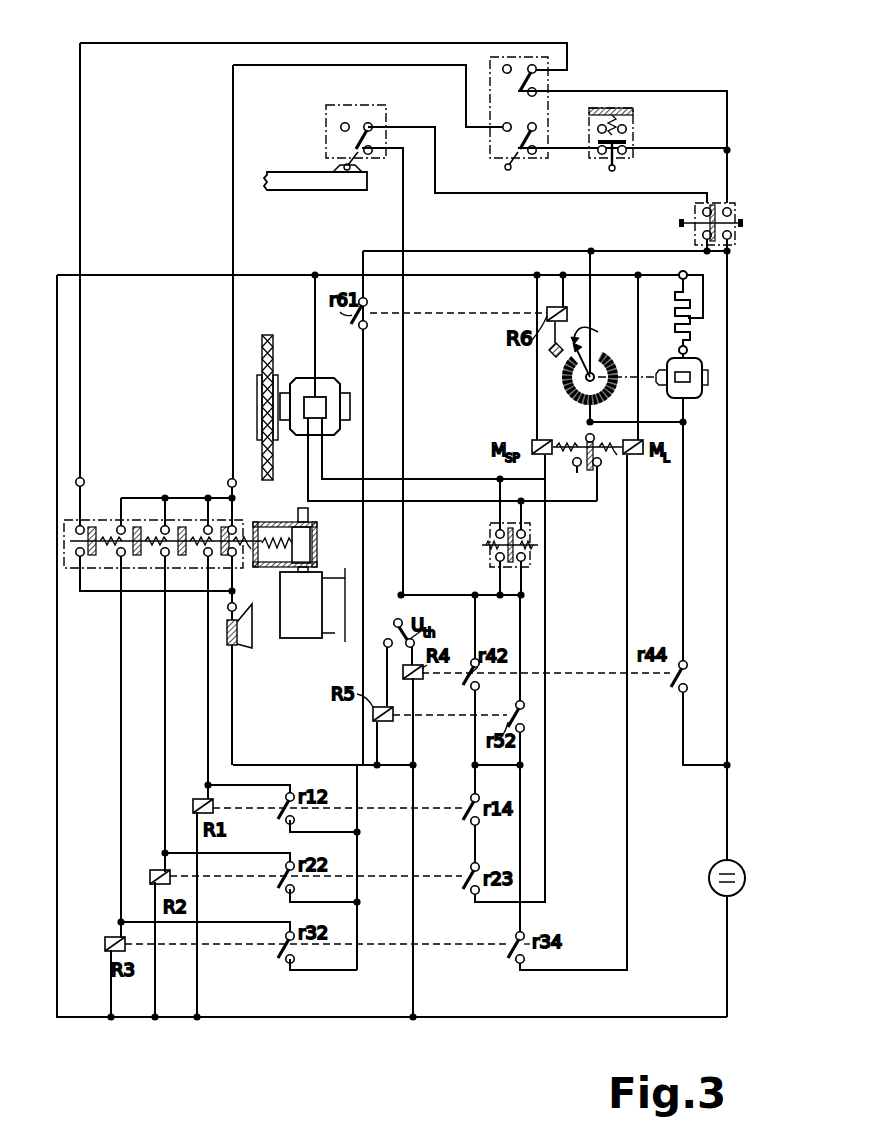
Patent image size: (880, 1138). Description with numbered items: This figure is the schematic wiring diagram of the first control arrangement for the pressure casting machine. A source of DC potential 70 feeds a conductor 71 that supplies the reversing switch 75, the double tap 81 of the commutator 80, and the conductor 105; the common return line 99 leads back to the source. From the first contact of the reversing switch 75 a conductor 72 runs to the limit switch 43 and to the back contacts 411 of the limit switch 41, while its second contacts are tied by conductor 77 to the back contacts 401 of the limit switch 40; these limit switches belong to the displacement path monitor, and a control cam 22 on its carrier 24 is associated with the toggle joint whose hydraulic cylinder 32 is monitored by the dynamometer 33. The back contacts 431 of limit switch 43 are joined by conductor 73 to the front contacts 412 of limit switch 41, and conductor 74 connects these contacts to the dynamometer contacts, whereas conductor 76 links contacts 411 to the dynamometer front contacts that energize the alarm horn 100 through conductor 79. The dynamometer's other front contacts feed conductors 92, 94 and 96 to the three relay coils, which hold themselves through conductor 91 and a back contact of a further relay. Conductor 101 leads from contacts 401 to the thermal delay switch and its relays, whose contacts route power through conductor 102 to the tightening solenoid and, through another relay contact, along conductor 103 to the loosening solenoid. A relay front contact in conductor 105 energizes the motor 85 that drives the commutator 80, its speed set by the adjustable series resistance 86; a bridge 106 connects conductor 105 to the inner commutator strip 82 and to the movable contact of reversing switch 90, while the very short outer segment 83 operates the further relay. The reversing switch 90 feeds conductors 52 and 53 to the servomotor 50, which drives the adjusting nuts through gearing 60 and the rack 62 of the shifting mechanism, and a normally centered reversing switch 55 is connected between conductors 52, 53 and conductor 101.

The conductor 76 is at (180, 43).
The conductor 74 is at (233, 123).
The limit switch 40 is at (322, 115).
The back contacts of limit switch 40 401 is at (373, 130).
The control cam 22 is at (333, 168).
The carrier 24 is at (308, 190).
The limit switch 41 is at (490, 140).
The back contacts of limit switch 41 411 is at (547, 80).
The front contacts of limit switch 41 412 is at (510, 151).
The conductor 72 is at (678, 93).
The conductor 73 is at (564, 158).
The limit switch 43 is at (640, 129).
The back contacts of limit switch 43 431 is at (617, 167).
The reversing switch 75 is at (712, 202).
The conductor 77 is at (553, 195).
The conductor 71 is at (434, 251).
The return line 99 is at (440, 277).
The adjustable speed controlling series resistance 86 is at (676, 300).
The motor 85 is at (703, 359).
The bridge 106 is at (668, 422).
The commutator 80 is at (614, 344).
The double tap 81 is at (597, 349).
The outer commutator segment 83 is at (548, 353).
The inner commutator strip 82 is at (571, 394).
The reversing switch 90 is at (586, 491).
The conductor 52 is at (415, 479).
The conductor 53 is at (455, 501).
The reversing switch 55 is at (483, 556).
The conductor 101 is at (403, 419).
The conductor 91 is at (361, 740).
The conductor 102 is at (545, 804).
The conductor 103 is at (626, 760).
The conductor 105 is at (683, 612).
The source of DC potential 70 is at (708, 886).
The rack 62 is at (262, 357).
The gearing 60 is at (271, 335).
The servomotor 50 is at (318, 378).
The conductor 79 is at (102, 594).
The alarm horn 100 is at (250, 641).
The dynamometer 33 is at (320, 549).
The hydraulic cylinder 32 is at (327, 638).
The conductor 92 is at (208, 688).
The conductor 94 is at (162, 740).
The conductor 96 is at (118, 772).